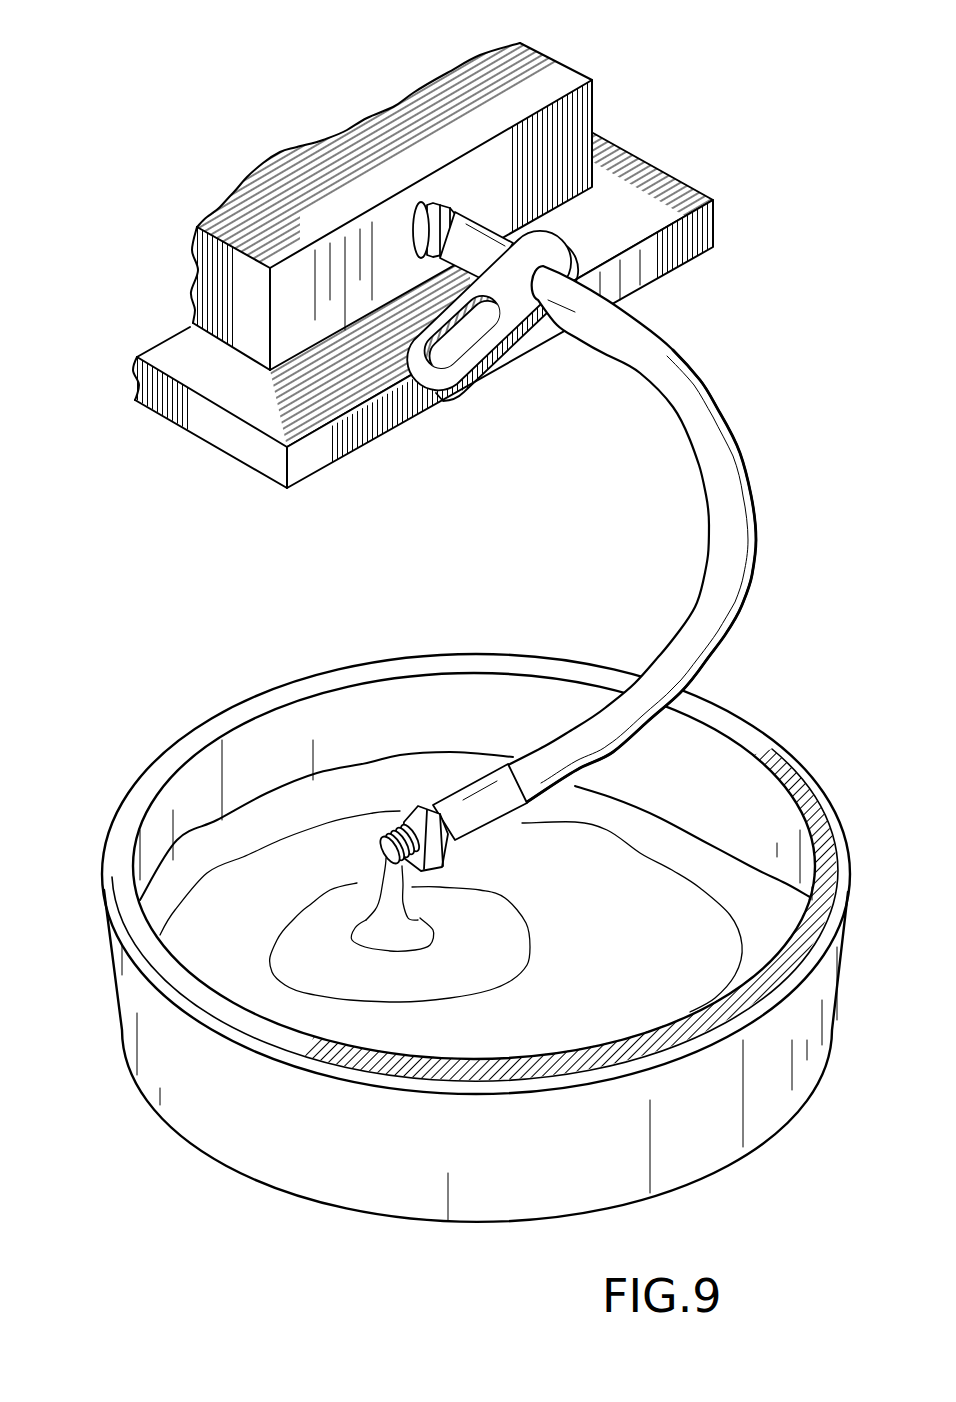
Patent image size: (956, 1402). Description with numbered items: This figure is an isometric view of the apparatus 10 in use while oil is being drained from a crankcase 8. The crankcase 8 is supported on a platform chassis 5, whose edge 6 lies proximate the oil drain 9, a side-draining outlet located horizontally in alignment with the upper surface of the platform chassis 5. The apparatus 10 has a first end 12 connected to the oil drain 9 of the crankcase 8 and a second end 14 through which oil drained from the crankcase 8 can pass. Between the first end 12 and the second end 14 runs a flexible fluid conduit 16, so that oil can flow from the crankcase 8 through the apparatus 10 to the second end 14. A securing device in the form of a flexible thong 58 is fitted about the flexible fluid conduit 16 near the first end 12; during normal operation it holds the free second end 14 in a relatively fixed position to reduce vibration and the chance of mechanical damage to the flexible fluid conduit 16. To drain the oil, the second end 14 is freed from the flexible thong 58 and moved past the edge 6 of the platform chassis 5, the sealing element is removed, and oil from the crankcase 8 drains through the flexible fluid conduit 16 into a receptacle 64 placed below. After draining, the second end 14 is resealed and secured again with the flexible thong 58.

The platform chassis 5 is at (431, 329).
The edge 6 is at (317, 447).
The crankcase 8 is at (557, 67).
The oil drain 9 is at (423, 210).
The apparatus 10 is at (553, 540).
The first end 12 is at (486, 222).
The second end 14 is at (469, 780).
The flexible fluid conduit 16 is at (700, 483).
The flexible thong 58 is at (483, 357).
The receptacle 64 is at (117, 850).